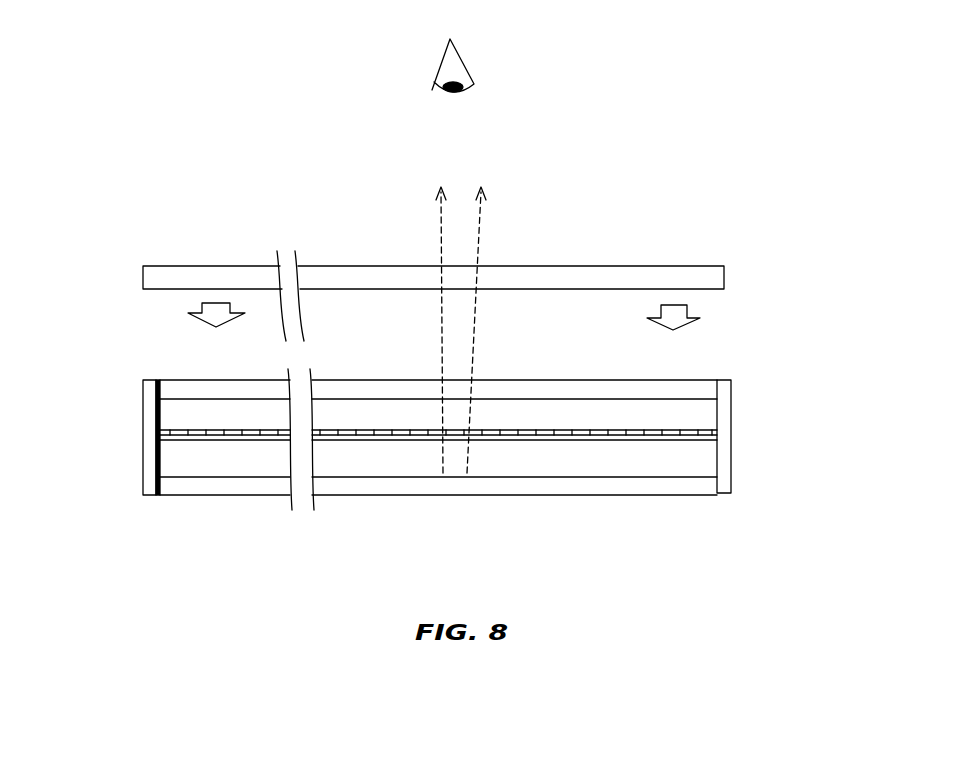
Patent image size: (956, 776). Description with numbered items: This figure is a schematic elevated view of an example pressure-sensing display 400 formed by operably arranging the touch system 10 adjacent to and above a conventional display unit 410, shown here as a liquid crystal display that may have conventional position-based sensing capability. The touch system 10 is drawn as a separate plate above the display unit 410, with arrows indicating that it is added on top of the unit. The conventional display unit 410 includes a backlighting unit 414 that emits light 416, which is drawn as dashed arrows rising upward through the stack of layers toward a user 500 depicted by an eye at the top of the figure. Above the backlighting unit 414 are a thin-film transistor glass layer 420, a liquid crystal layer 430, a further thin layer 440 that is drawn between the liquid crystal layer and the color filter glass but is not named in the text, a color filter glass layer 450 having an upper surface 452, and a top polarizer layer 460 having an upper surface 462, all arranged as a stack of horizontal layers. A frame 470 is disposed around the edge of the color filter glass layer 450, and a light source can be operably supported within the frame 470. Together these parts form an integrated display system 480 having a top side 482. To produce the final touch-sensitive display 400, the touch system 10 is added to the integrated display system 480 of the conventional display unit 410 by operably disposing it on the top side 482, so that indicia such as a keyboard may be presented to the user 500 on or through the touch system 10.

The touch system 10 is at (220, 243).
The pressure-sensing display 400 is at (739, 307).
The conventional display unit 410 is at (116, 350).
The backlighting unit 414 is at (171, 485).
The light 416 is at (489, 219).
The thin-film transistor glass layer 420 is at (178, 459).
The liquid crystal layer 430 is at (165, 438).
The light source layer 440 is at (165, 433).
The color filter glass layer 450 is at (177, 419).
The upper surface 452 is at (342, 393).
The top polarizer layer 460 is at (172, 391).
The upper surface 462 is at (195, 380).
The frame 470 is at (728, 430).
The integrated display system 480 is at (708, 518).
The top side 482 is at (707, 359).
The user 500 is at (416, 60).